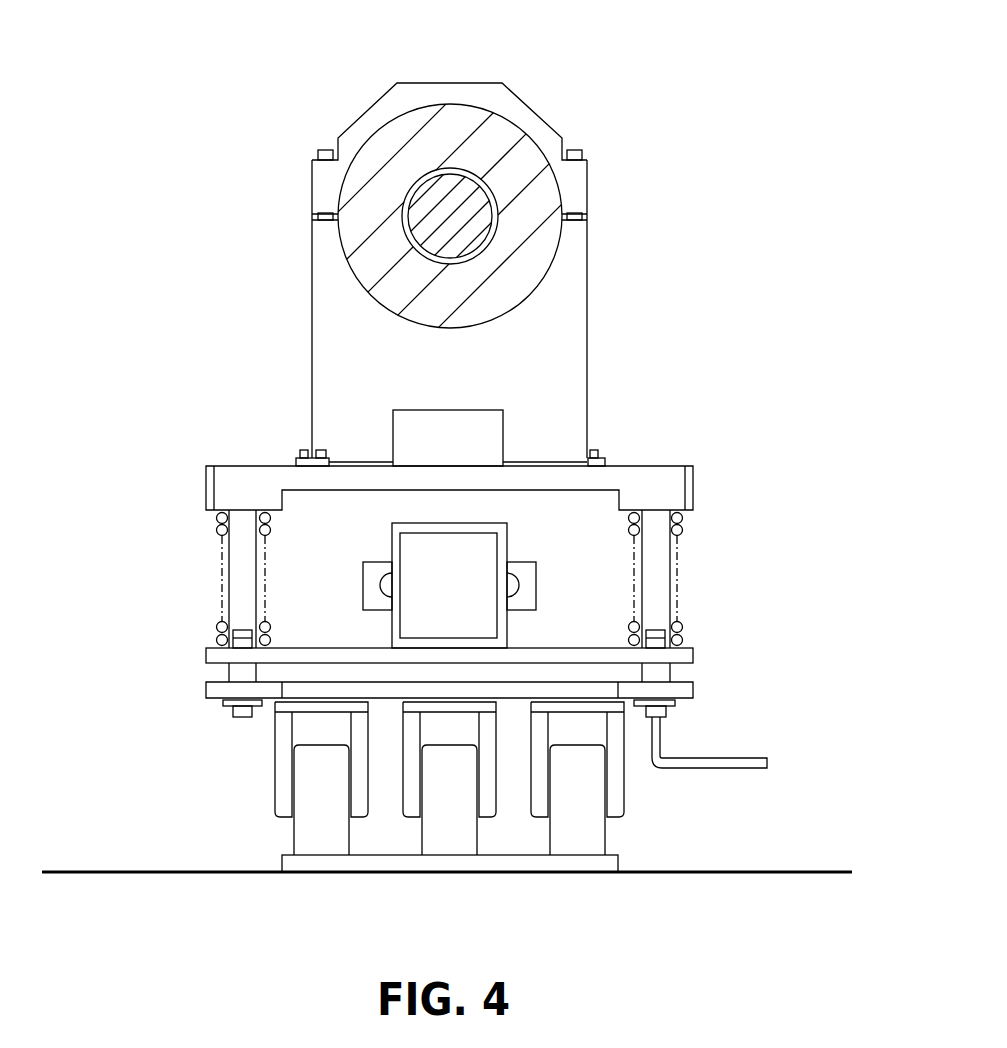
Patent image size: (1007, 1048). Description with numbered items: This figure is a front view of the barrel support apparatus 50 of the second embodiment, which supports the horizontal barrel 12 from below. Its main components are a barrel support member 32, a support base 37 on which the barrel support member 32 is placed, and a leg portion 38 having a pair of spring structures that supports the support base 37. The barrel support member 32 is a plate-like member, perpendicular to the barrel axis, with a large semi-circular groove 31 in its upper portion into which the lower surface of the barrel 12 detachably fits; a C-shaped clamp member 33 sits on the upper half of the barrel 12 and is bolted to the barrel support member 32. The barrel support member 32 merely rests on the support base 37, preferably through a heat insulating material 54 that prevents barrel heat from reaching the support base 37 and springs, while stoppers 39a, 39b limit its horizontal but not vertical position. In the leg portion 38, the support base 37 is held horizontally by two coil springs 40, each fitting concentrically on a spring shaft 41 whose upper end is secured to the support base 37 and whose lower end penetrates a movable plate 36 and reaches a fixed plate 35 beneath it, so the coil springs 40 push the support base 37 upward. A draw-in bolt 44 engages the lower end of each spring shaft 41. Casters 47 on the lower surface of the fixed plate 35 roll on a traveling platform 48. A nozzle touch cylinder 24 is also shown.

The barrel support apparatus 50 is at (745, 100).
The barrel 12 is at (372, 135).
The semi-circular groove 31 is at (388, 308).
The barrel support member 32 is at (566, 316).
The clamp member 33 is at (447, 98).
The heat insulating material 54 is at (541, 458).
The stopper 39a is at (297, 459).
The stopper 39b is at (603, 458).
The support base 37 is at (612, 478).
The coil spring 40 is at (222, 535).
The leg portion 38 is at (202, 579).
The spring shaft 41 is at (245, 610).
The movable plate 36 is at (325, 658).
The nozzle touch cylinder 24 is at (507, 540).
The fixed plate 35 is at (387, 690).
The draw-in bolt 44 is at (233, 713).
The caster 47 is at (587, 793).
The traveling platform 48 is at (283, 862).